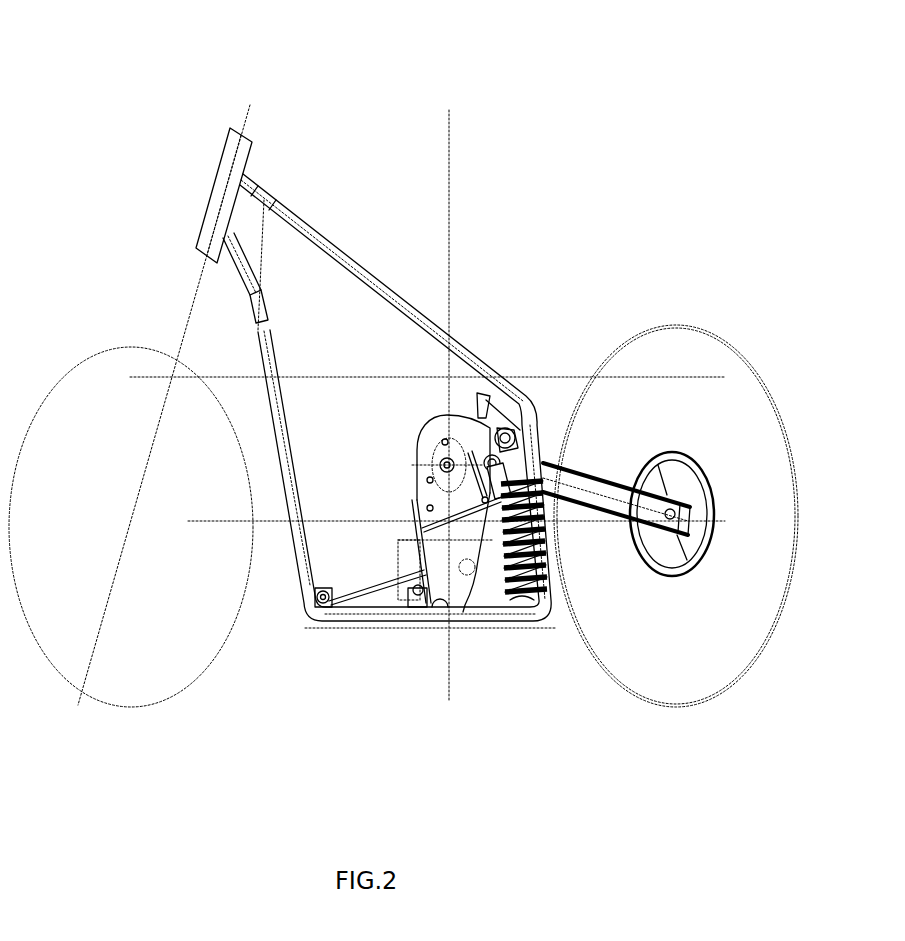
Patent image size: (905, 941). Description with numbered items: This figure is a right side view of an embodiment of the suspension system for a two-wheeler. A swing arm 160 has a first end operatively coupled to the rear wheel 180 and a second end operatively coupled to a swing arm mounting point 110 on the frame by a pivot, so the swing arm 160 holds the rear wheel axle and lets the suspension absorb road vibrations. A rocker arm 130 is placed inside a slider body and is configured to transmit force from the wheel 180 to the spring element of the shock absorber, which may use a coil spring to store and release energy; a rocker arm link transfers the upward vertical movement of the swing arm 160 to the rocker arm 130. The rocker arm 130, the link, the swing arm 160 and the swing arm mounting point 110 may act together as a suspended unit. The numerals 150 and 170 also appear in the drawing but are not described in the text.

The swing arm mounting point 110 is at (463, 612).
The rocker arm 130 is at (523, 410).
The main frame 150 is at (536, 622).
The swing arm 160 is at (600, 478).
The vehicle frame assembly 170 is at (566, 56).
The rear wheel 180 is at (795, 563).